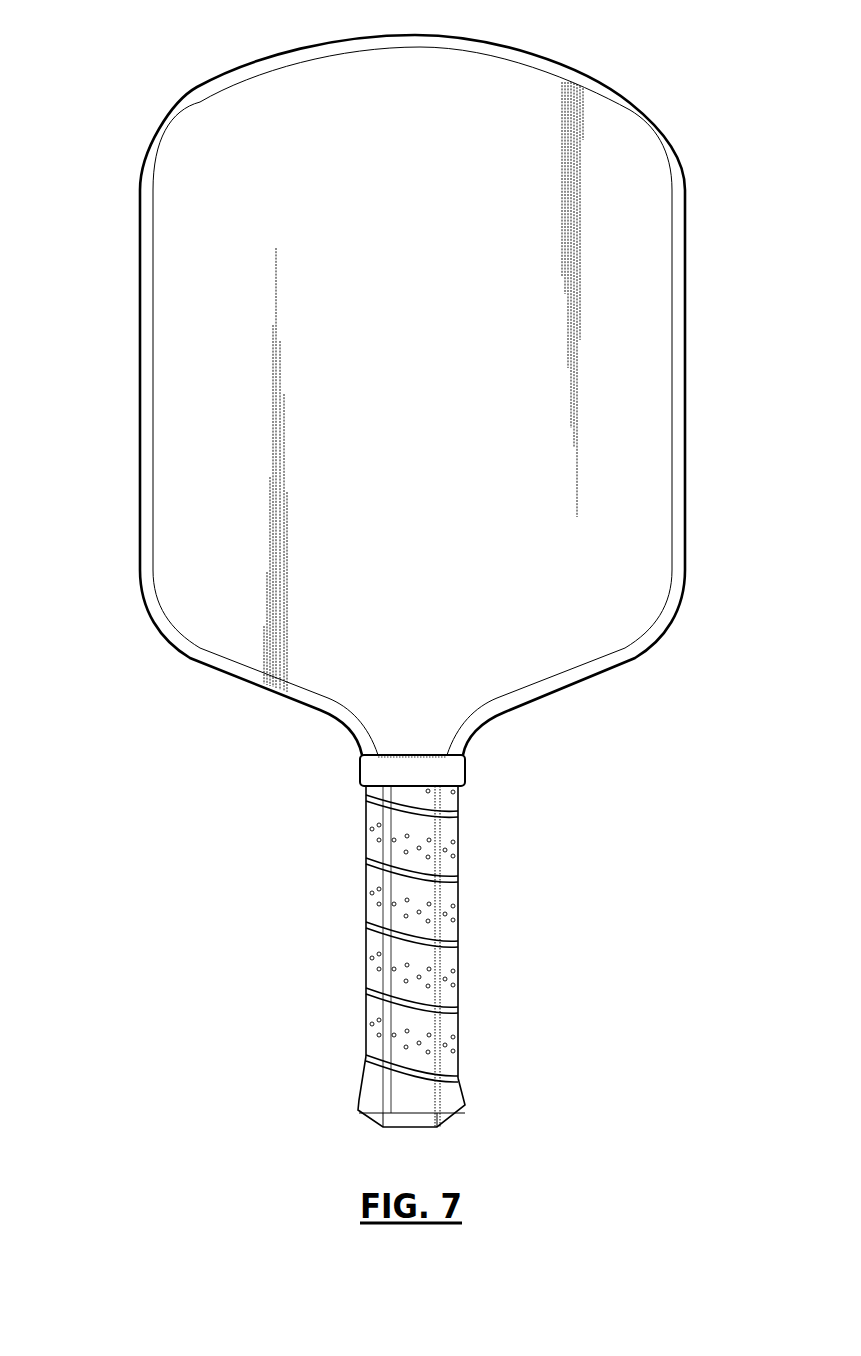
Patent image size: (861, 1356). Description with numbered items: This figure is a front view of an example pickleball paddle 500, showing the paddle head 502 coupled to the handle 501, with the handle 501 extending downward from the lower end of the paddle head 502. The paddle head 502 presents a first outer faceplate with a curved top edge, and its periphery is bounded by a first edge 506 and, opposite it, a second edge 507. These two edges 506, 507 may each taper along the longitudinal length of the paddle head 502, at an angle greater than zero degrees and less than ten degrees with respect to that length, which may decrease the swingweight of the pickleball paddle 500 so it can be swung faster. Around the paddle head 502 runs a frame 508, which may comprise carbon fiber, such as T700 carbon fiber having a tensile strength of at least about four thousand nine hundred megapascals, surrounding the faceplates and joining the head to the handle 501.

The pickleball paddle 500 is at (103, 62).
The handle 501 is at (462, 978).
The paddle head 502 is at (622, 95).
The first edge 506 is at (688, 373).
The second edge 507 is at (138, 374).
The frame 508 is at (190, 662).